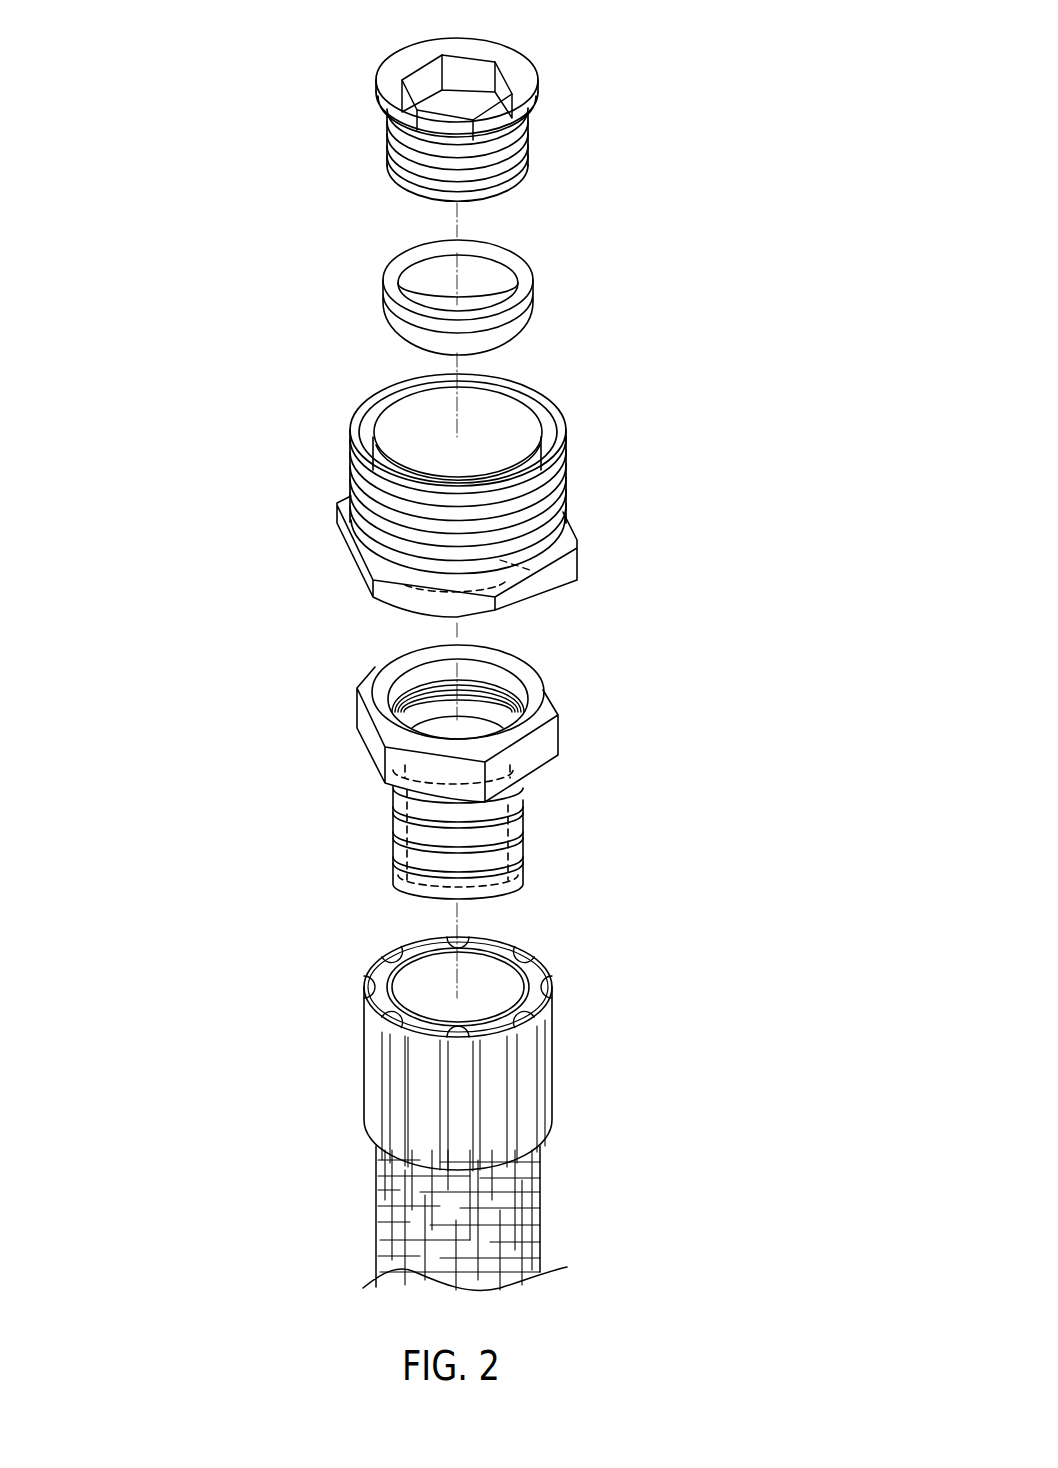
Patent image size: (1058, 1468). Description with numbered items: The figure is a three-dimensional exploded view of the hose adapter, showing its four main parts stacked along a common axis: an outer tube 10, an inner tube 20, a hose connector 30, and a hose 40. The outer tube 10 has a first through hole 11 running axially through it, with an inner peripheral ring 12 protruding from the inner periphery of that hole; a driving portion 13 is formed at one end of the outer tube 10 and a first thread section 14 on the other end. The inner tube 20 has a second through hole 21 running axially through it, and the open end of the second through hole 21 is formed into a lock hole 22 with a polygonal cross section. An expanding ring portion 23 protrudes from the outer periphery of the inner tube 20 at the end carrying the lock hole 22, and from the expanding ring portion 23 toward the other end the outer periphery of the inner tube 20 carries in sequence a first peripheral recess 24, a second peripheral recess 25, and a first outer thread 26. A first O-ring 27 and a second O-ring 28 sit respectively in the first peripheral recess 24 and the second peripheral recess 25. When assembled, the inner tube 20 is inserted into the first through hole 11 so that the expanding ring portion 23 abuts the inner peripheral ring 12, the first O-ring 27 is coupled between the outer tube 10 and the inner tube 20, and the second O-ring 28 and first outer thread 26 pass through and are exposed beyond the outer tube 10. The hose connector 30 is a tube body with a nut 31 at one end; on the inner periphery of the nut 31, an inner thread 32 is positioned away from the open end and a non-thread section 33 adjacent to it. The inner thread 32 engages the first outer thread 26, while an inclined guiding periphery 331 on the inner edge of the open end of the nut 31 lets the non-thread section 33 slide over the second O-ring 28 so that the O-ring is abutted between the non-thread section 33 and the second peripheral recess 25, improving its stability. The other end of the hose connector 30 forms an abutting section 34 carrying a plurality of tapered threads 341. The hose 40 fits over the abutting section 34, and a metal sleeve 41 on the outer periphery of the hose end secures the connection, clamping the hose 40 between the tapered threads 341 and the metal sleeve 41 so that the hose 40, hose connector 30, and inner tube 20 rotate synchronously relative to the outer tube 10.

The outer tube 10 is at (590, 482).
The first through hole 11 is at (407, 430).
The inner peripheral ring 12 is at (533, 570).
The driving portion 13 is at (357, 565).
The first thread section 14 is at (567, 450).
The inner tube 20 is at (575, 90).
The second through hole 21 is at (467, 105).
The lock hole 22 is at (422, 78).
The expanding ring portion 23 is at (423, 110).
The first peripheral recess 24 is at (382, 124).
The second peripheral recess 25 is at (495, 163).
The first outer thread 26 is at (505, 192).
The first O-ring 27 is at (527, 277).
The second O-ring 28 is at (393, 322).
The hose connector 30 is at (580, 795).
The nut 31 is at (552, 748).
The inner thread 32 is at (413, 703).
The non-thread section 33 is at (413, 675).
The inclined guiding periphery 331 is at (513, 672).
The abutting section 34 is at (412, 883).
The tapered threads 341 is at (398, 858).
The hose 40 is at (548, 1208).
The metal sleeve 41 is at (543, 1065).